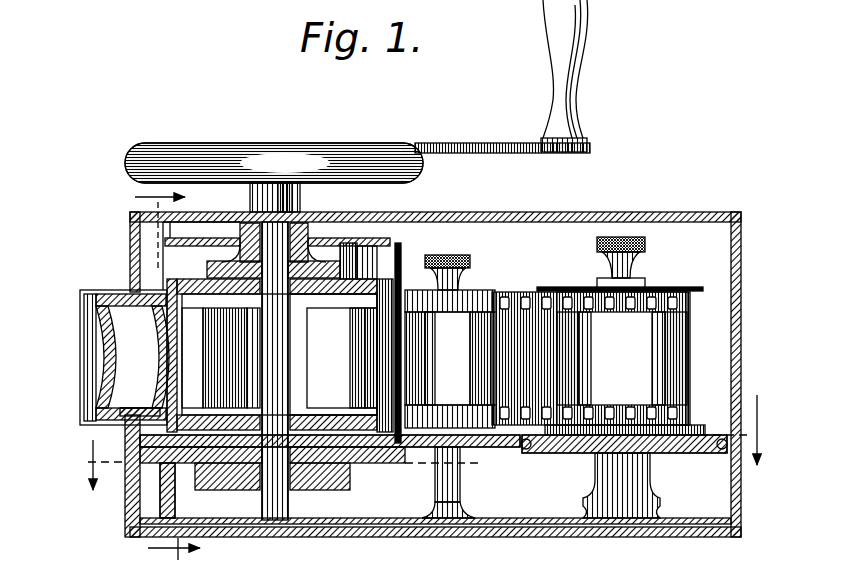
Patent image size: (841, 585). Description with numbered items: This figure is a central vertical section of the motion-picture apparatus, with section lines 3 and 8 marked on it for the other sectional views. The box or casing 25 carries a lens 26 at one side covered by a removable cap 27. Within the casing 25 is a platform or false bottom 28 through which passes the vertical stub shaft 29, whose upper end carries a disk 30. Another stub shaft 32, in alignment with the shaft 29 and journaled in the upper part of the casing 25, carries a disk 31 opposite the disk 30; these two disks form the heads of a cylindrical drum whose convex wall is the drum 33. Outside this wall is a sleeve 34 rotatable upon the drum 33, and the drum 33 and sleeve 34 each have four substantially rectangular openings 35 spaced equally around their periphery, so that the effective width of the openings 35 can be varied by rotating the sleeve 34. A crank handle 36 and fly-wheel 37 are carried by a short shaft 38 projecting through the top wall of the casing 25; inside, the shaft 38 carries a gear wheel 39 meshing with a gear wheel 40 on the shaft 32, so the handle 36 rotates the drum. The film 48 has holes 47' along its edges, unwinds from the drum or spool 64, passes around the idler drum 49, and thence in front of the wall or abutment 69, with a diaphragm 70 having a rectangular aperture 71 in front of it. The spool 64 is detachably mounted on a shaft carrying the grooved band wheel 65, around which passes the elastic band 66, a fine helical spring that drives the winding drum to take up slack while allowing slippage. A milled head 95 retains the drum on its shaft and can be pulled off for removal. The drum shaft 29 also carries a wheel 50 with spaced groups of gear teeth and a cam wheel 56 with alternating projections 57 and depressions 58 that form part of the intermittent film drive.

The box or casing 25 is at (640, 213).
The lens 26 is at (100, 345).
The removable cap 27 is at (88, 315).
The platform or false bottom 28 is at (478, 448).
The vertical stub shaft 29 is at (291, 450).
The disk 30 is at (307, 420).
The disk 31 is at (245, 300).
The stub shaft 32 is at (300, 222).
The drum 33 is at (253, 358).
The sleeve 34 is at (364, 381).
The rectangular openings 35 is at (336, 358).
The crank handle 36 is at (582, 76).
The fly-wheel 37 is at (245, 150).
The short shaft 38 is at (258, 197).
The gear wheel 39 is at (360, 262).
The gear wheel 40 is at (335, 262).
The holes 47' is at (591, 341).
The film 48 is at (535, 347).
The rotatable drum 49 is at (466, 292).
The wheel 50 is at (385, 471).
The cam wheel 56 is at (325, 488).
The projections 57 is at (192, 478).
The depressions 58 is at (192, 478).
The drum or spool 64 is at (703, 290).
The grooved band wheel 65 is at (672, 452).
The elastic band 66 is at (722, 438).
The wall or abutment 69 is at (410, 349).
The diaphragm 70 is at (401, 285).
The rectangular aperture 71 is at (392, 361).
The milled head 95 is at (640, 268).
The section line 3— 3 is at (167, 384).
The section line 8— 8 is at (420, 442).